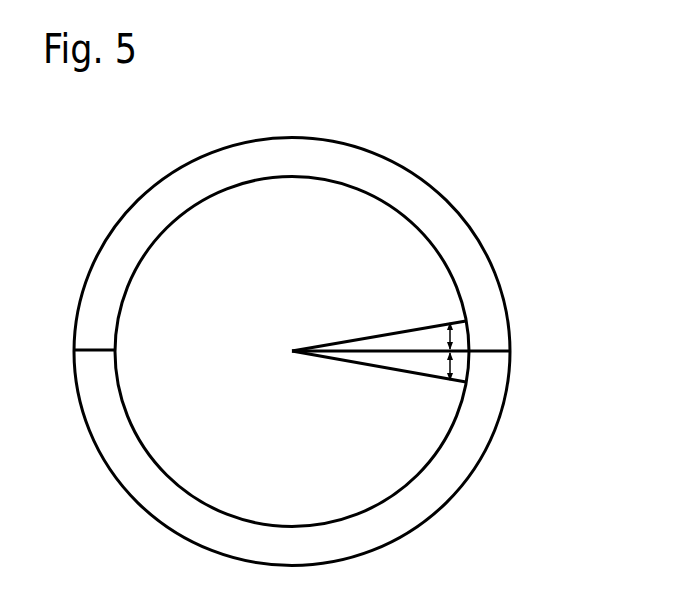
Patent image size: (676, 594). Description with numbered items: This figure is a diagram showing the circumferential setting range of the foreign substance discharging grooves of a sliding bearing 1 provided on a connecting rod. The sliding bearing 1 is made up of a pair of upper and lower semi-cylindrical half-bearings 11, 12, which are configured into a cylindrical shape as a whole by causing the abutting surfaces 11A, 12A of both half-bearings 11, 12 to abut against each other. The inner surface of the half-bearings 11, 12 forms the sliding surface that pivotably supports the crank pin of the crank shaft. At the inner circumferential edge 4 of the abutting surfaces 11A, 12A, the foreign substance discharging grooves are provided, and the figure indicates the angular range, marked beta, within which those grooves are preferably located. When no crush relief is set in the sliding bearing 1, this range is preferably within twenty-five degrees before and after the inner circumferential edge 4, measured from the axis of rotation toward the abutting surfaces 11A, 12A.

The sliding bearing 1 is at (334, 352).
The half-bearing 11 is at (433, 196).
The abutting surface 11A is at (497, 353).
The half-bearing 12 is at (457, 466).
The abutting surface 12A is at (497, 348).
The inner circumferential edge 4 is at (470, 352).